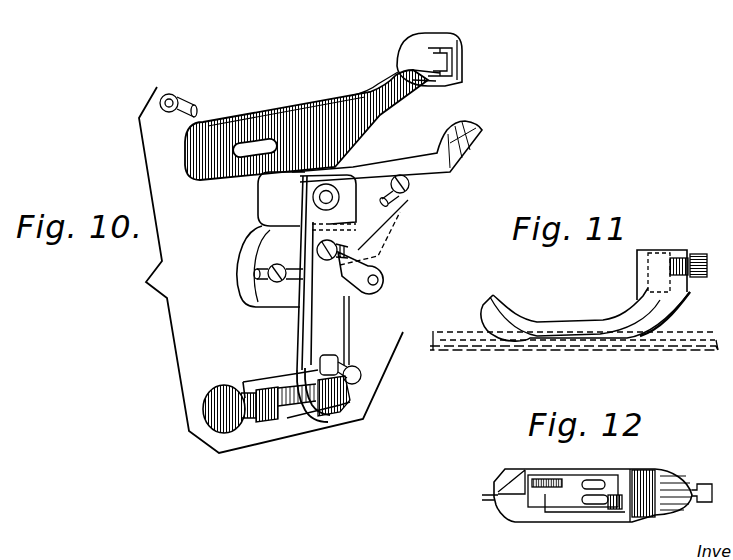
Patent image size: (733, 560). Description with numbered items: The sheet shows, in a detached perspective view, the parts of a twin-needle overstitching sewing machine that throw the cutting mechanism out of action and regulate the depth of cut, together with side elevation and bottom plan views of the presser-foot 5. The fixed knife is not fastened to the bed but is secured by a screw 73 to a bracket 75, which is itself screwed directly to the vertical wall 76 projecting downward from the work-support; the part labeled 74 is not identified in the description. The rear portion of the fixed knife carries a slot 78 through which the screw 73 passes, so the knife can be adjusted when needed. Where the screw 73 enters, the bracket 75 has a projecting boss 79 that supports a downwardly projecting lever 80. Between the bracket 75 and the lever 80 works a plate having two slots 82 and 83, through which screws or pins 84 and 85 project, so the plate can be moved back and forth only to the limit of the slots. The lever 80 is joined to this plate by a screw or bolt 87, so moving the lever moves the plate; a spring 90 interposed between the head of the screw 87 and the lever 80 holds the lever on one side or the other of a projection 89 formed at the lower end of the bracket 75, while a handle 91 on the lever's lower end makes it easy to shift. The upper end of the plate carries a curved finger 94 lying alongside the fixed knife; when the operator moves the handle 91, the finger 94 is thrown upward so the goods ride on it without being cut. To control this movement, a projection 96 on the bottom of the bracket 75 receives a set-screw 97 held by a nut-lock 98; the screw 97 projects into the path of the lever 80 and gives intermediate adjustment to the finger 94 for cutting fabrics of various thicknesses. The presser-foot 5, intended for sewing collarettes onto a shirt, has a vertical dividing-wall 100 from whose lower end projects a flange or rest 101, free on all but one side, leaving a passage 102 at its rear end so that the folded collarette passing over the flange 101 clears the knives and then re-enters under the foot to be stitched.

In FIG. 11, the presser-foot 5 is at (569, 321).
In FIG. 12, the presser-foot 5 is at (655, 505).
In FIG. 10, the screw 73 is at (188, 106).
In FIG. 10, the arm 74 is at (392, 72).
In FIG. 10, the bracket 75 is at (254, 203).
In FIG. 10, the vertical wall 76 is at (440, 52).
In FIG. 10, the slot 78 is at (246, 145).
In FIG. 10, the projecting boss 79 is at (313, 272).
In FIG. 10, the lever 80 is at (340, 342).
In FIG. 10, the slot 82 is at (258, 282).
In FIG. 10, the slot 83 is at (412, 180).
In FIG. 10, the screw or pin 84 is at (249, 296).
In FIG. 10, the screw or pin 85 is at (407, 192).
In FIG. 10, the screw or bolt 87 is at (273, 295).
In FIG. 10, the projection 89 is at (343, 413).
In FIG. 10, the spring 90 is at (317, 247).
In FIG. 10, the handle 91 is at (357, 385).
In FIG. 10, the curved finger 94 is at (466, 124).
In FIG. 10, the projection 96 is at (273, 427).
In FIG. 10, the set-screw 97 is at (295, 407).
In FIG. 10, the nut-lock 98 is at (252, 422).
In FIG. 11, the vertical dividing-wall 100 is at (488, 300).
In FIG. 12, the vertical dividing-wall 100 is at (487, 498).
In FIG. 11, the flange or rest 101 is at (513, 341).
In FIG. 11, the passage 102 is at (533, 343).